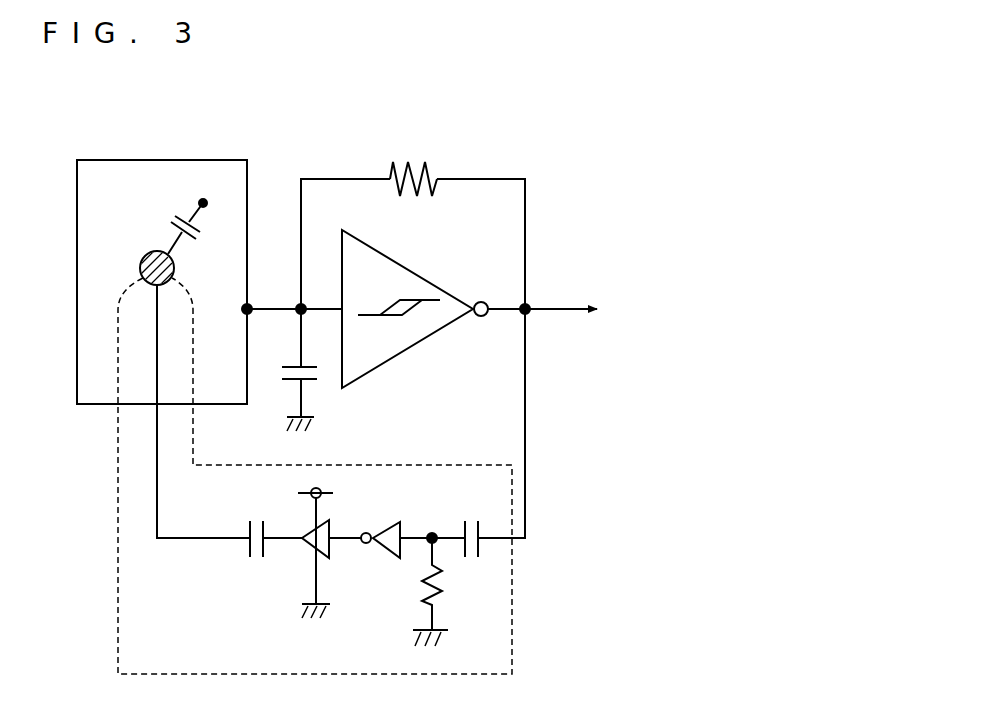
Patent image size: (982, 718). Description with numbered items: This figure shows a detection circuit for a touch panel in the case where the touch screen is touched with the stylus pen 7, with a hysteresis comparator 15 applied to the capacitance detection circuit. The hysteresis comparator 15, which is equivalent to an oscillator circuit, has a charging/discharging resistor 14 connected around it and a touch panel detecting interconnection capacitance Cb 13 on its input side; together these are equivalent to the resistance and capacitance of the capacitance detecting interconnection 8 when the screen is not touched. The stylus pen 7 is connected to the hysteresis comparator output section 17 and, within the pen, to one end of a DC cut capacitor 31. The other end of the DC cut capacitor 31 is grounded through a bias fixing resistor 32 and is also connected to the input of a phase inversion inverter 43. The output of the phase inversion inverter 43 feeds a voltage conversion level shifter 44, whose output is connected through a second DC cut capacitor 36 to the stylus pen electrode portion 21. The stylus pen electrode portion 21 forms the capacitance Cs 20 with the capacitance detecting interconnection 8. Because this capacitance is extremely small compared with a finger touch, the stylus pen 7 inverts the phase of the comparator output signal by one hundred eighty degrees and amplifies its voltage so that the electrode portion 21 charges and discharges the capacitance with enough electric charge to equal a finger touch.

The capacitance detecting interconnection 8 is at (163, 160).
The stylus pen 7 is at (512, 617).
The stylus pen electrode portion 21 is at (144, 258).
The capacitance Cs between the stylus pen and the detecting interconnection 20 is at (173, 221).
The charging/discharging resistor 14 is at (405, 162).
The hysteresis comparator 15 is at (414, 266).
The hysteresis comparator output section 17 is at (563, 305).
The touch panel detecting interconnection capacitance Cb 13 is at (320, 377).
The DC cut capacitor 36 is at (255, 520).
The voltage conversion level shifter 44 is at (326, 549).
The phase inversion inverter 43 is at (393, 521).
The DC cut capacitor 31 is at (476, 521).
The bias fixing resistor 32 is at (444, 585).